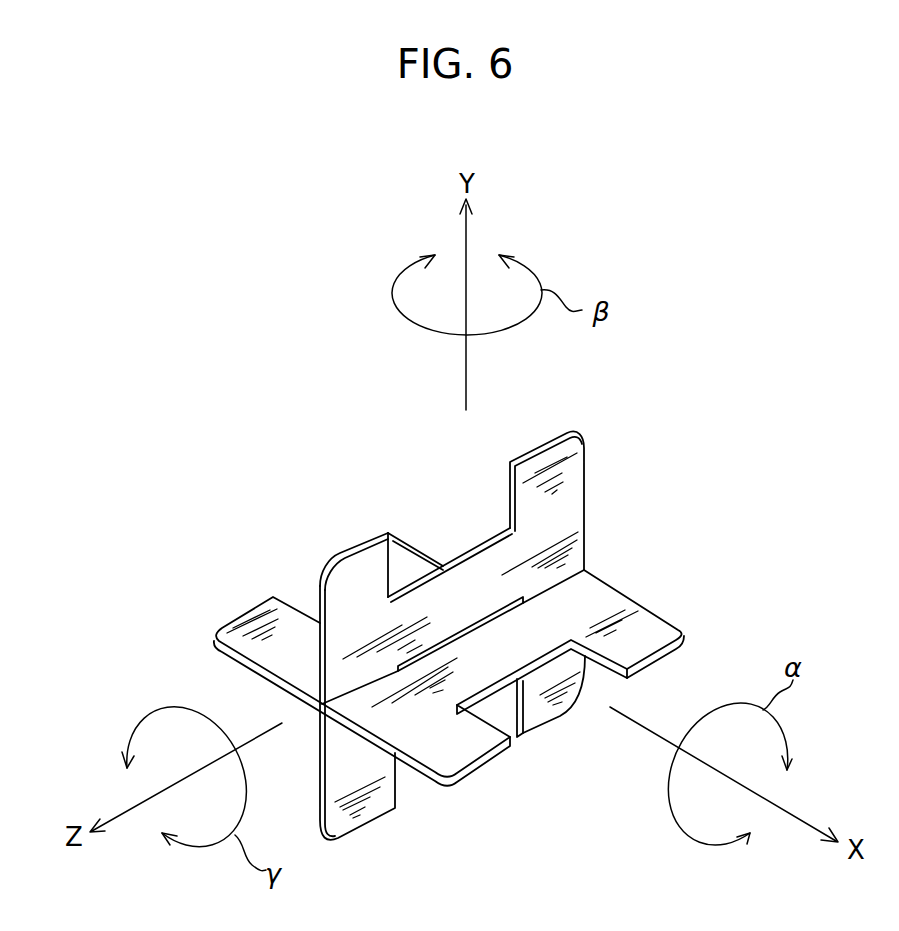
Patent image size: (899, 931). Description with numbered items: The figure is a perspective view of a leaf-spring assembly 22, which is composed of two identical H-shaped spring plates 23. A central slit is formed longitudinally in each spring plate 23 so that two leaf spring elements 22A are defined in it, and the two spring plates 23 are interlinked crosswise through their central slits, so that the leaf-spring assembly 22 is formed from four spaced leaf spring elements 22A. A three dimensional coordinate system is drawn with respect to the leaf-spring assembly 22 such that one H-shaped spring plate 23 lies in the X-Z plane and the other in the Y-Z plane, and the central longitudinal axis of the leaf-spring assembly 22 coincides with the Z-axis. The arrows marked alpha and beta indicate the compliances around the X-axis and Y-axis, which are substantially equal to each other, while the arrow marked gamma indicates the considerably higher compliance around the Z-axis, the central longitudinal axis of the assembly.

The leaf-spring assembly 22 is at (449, 647).
The leaf spring element 22A is at (463, 596).
The H-shaped spring plate 23 is at (589, 502).